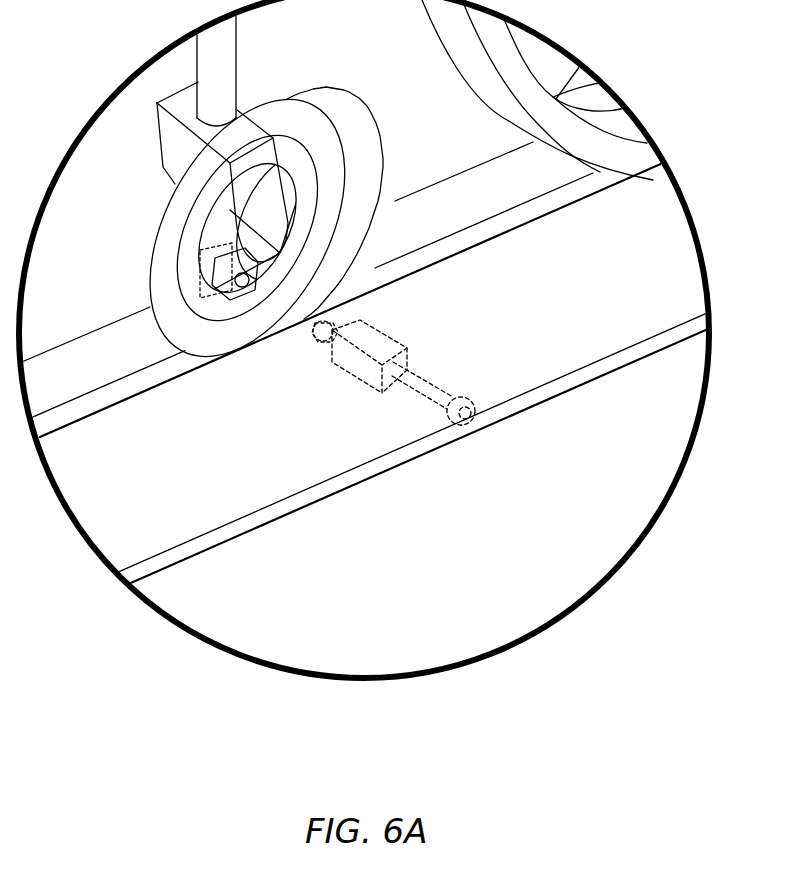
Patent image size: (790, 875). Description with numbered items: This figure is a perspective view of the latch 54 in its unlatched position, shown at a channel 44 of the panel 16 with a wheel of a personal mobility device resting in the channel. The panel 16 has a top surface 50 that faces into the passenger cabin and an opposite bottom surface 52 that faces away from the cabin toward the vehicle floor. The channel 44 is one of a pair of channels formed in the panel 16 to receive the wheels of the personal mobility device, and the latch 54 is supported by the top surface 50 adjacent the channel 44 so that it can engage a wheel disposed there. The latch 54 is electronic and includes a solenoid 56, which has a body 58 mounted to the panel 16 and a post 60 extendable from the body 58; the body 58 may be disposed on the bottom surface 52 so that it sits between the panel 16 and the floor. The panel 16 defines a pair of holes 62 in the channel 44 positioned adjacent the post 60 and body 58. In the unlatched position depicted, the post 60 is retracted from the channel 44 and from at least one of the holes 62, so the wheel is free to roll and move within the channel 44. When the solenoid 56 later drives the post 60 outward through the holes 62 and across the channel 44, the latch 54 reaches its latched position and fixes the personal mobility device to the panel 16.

The panel 16 is at (298, 512).
The channel 44 is at (90, 407).
The top surface 50 is at (170, 471).
The bottom surface 52 is at (630, 361).
The latch 54 is at (392, 370).
The solenoid 56 is at (365, 358).
The body 58 is at (357, 363).
The post 60 is at (408, 393).
The holes 62 is at (203, 296).